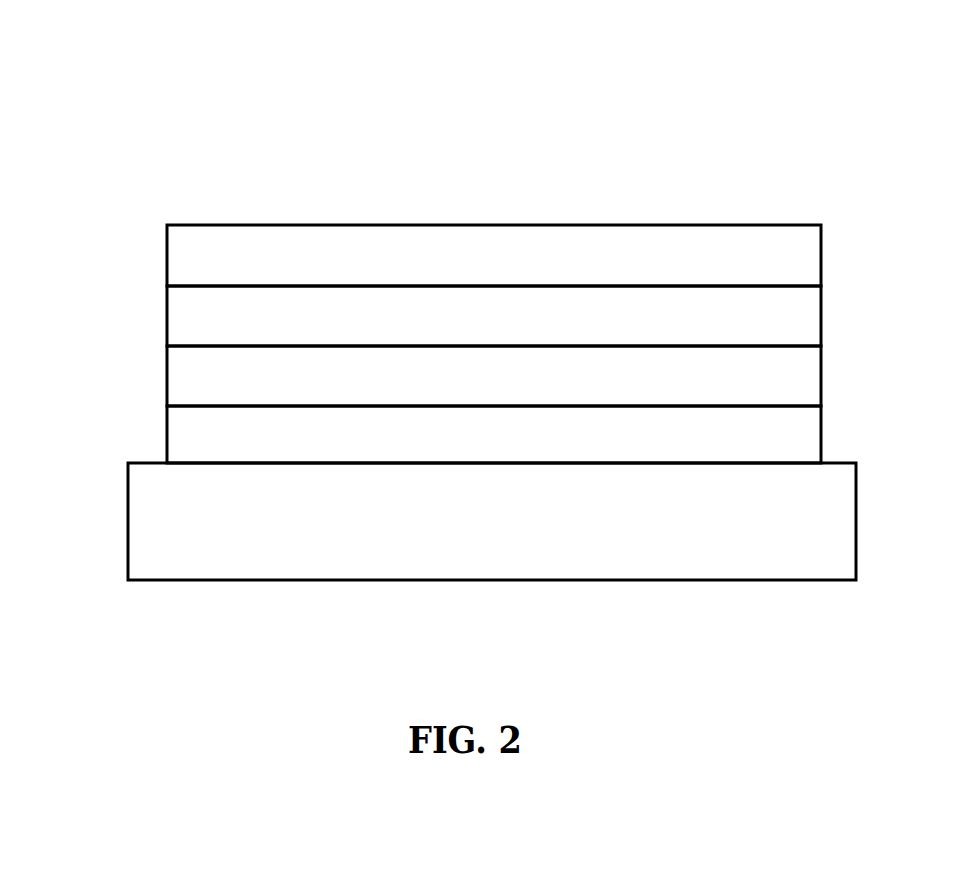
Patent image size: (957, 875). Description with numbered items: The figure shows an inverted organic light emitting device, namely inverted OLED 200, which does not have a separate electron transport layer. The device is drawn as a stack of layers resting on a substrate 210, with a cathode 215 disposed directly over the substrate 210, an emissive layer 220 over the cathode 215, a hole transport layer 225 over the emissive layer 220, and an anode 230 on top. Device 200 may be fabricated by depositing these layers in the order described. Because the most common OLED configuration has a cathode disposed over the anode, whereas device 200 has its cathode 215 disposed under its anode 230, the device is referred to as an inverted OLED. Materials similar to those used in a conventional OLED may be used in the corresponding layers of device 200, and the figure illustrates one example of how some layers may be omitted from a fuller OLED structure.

The inverted OLED 200 is at (322, 168).
The substrate 210 is at (447, 581).
The cathode 215 is at (167, 433).
The emissive layer 220 is at (167, 375).
The hole transport layer 225 is at (167, 314).
The anode 230 is at (167, 255).